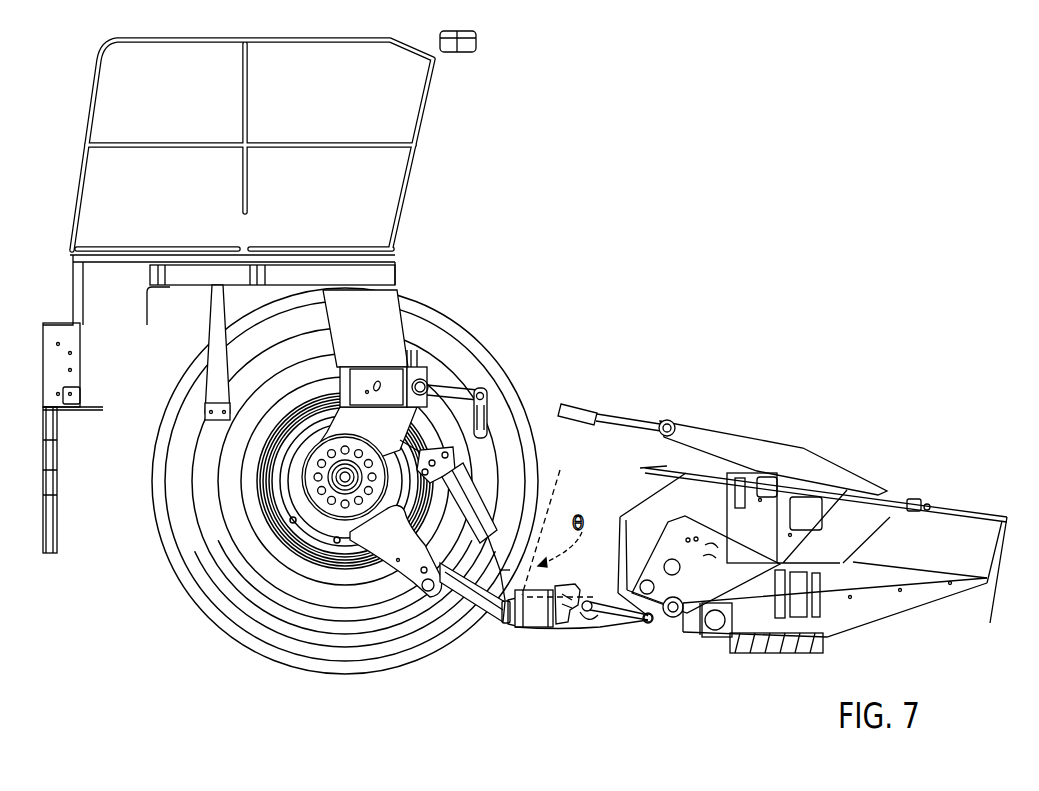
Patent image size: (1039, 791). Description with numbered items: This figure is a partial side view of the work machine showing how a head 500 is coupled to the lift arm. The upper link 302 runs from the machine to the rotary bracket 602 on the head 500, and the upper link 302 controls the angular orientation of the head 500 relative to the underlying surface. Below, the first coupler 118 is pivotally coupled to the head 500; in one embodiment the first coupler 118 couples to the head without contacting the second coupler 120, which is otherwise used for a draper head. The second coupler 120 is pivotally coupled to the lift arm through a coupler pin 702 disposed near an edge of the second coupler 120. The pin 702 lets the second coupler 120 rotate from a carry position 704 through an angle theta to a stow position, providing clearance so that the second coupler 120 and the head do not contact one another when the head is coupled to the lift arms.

The header 500 is at (848, 442).
The rotary bracket 602 is at (748, 448).
The upper link 302 is at (580, 410).
The first coupler 118 is at (646, 624).
The second coupler 120 is at (528, 627).
The coupler pin 702 is at (514, 630).
The carry position 704 is at (550, 637).